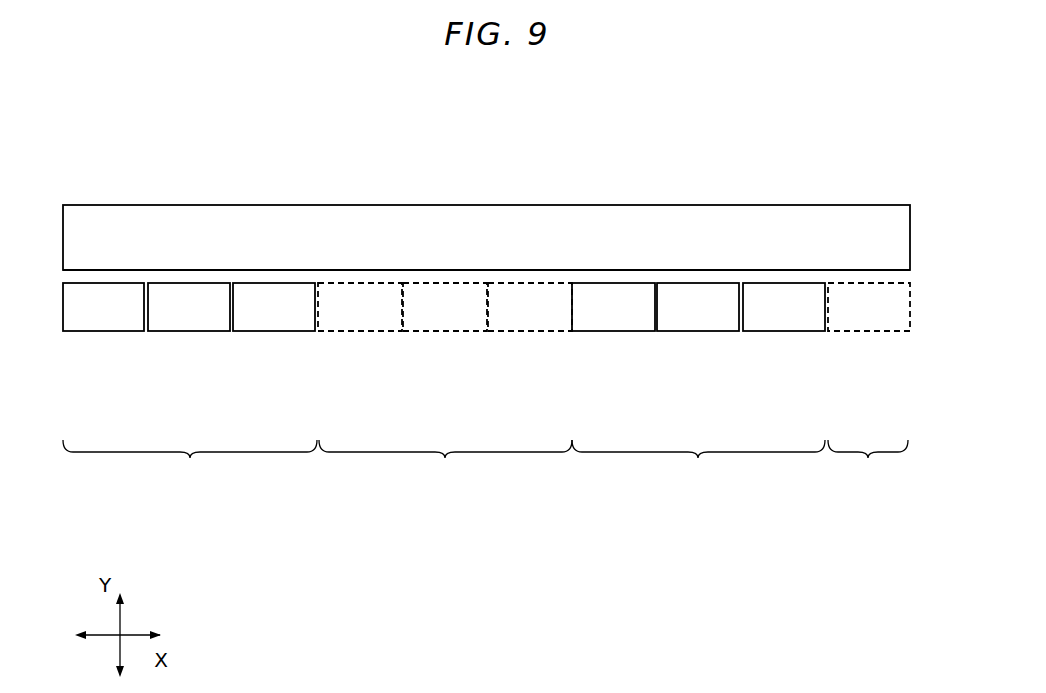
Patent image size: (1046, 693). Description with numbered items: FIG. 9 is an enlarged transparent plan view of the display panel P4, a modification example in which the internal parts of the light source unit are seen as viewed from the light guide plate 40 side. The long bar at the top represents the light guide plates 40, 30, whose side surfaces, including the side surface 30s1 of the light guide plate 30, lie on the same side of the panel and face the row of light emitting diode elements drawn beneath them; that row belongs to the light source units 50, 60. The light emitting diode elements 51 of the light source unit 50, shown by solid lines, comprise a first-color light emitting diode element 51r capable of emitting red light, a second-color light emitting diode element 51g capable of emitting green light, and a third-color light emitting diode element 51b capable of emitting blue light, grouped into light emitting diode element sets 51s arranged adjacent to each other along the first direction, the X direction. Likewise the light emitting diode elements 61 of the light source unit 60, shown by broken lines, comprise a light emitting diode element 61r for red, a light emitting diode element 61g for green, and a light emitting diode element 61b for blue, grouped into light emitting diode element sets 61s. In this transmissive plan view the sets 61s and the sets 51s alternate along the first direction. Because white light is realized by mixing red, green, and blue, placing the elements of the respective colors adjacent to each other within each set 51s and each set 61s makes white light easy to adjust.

The display panel P4 is at (435, 143).
The light guide plate 40 is at (177, 222).
The light guide plate 30 is at (486, 237).
The side surface of light guide plate 30s1 is at (727, 279).
The light source unit 50 is at (910, 330).
The light source unit 60 is at (486, 357).
The light emitting diode elements 51 is at (444, 357).
The first-color light emitting diode element 51r is at (105, 331).
The second-color light emitting diode element 51g is at (190, 331).
The third-color light emitting diode element 51b is at (275, 331).
The light emitting diode elements 61 is at (614, 357).
The first-color light emitting diode element 61r is at (360, 331).
The second-color light emitting diode element 61g is at (445, 331).
The third-color light emitting diode element 61b is at (529, 331).
The light emitting diode element set 51s is at (444, 465).
The light emitting diode element set 61s is at (613, 465).